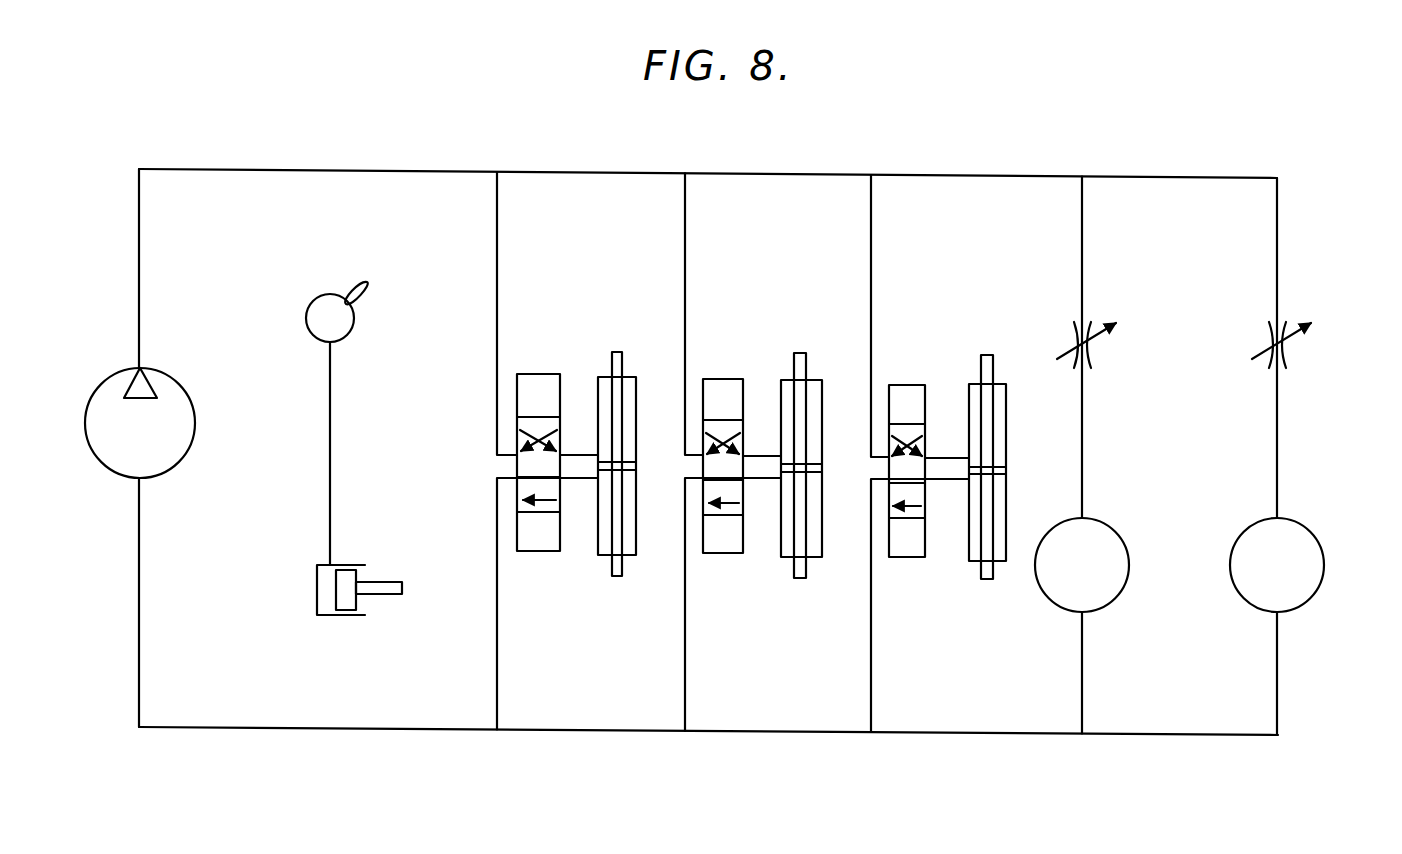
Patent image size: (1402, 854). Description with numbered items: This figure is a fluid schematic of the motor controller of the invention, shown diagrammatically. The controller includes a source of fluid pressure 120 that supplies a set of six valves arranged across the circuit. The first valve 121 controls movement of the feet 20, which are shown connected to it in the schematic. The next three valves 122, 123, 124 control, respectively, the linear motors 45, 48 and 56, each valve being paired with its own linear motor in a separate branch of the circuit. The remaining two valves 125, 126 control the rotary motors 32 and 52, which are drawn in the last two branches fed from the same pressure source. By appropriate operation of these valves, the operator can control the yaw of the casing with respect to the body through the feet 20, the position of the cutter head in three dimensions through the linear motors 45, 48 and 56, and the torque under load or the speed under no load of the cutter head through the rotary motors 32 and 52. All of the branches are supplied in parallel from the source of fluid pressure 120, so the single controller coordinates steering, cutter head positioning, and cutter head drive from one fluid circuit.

The source of fluid pressure 120 is at (176, 466).
The valve 121 is at (352, 328).
The feet 20 is at (385, 600).
The valve 122 is at (527, 374).
The valve 123 is at (716, 379).
The valve 124 is at (900, 385).
The linear motor 45 is at (623, 556).
The linear motor 48 is at (815, 475).
The linear motor 56 is at (995, 466).
The valve 125 is at (1099, 322).
The valve 126 is at (1299, 322).
The rotary motor 32 is at (1116, 597).
The rotary motor 52 is at (1311, 597).